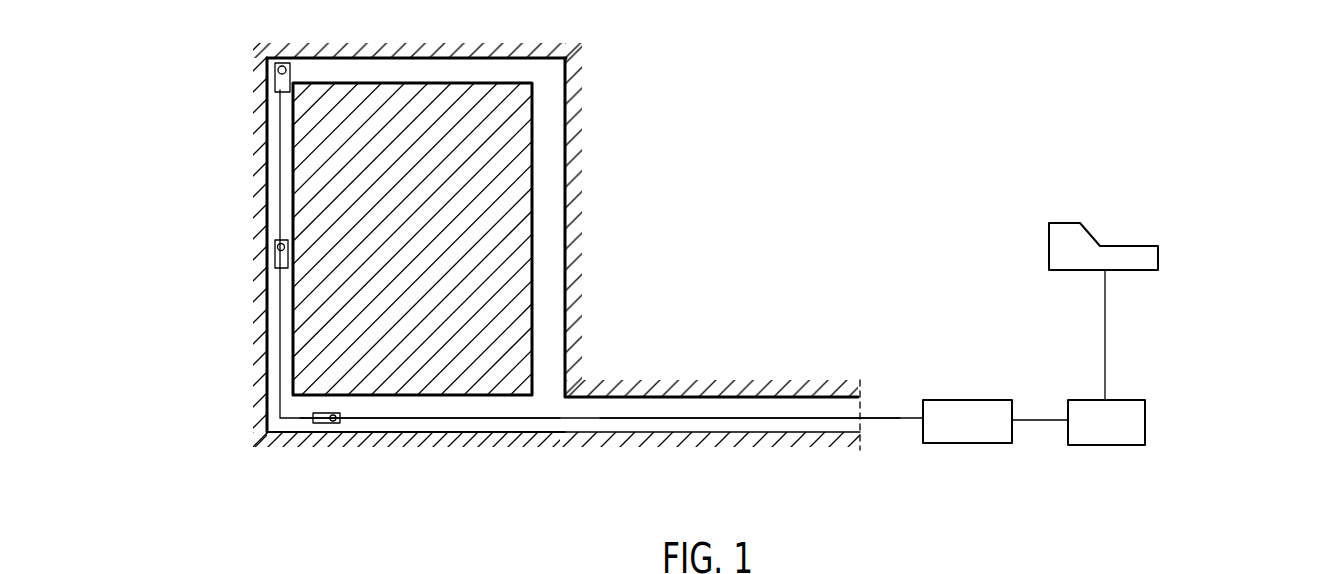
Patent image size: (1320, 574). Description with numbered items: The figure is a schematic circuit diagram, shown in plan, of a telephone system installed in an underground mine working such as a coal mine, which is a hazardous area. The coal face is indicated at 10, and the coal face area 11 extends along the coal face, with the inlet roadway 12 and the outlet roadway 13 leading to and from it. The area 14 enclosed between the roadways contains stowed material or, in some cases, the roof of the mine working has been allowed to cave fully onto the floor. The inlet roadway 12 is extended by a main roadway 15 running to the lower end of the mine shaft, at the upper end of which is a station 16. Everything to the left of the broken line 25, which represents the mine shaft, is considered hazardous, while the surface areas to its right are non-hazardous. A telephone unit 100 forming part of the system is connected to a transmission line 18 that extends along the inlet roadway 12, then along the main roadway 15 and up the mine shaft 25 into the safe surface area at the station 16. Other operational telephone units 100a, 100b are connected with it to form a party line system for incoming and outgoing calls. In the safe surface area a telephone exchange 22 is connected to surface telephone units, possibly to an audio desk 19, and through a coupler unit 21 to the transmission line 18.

The coal face 10 is at (534, 245).
The coal face area 11 is at (272, 325).
The inlet roadway 12 is at (407, 408).
The outlet roadway 13 is at (440, 72).
The stowed material area 14 is at (478, 212).
The main roadway 15 is at (746, 412).
The station 16 is at (1065, 335).
The transmission line 18 is at (465, 420).
The audio desk 19 is at (1153, 222).
The coupler unit 21 is at (958, 451).
The telephone exchange 22 is at (1143, 451).
The broken line representing the mine shaft 25 is at (860, 382).
The telephone unit 100 is at (328, 424).
The operational telephone unit 100a is at (290, 72).
The operational telephone unit 100b is at (278, 260).